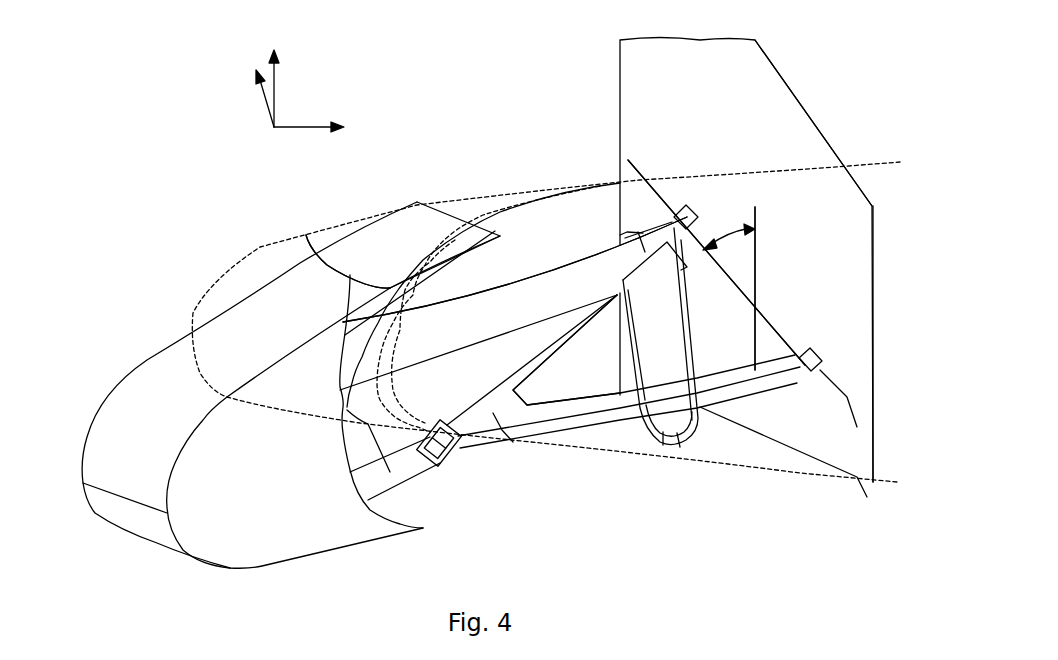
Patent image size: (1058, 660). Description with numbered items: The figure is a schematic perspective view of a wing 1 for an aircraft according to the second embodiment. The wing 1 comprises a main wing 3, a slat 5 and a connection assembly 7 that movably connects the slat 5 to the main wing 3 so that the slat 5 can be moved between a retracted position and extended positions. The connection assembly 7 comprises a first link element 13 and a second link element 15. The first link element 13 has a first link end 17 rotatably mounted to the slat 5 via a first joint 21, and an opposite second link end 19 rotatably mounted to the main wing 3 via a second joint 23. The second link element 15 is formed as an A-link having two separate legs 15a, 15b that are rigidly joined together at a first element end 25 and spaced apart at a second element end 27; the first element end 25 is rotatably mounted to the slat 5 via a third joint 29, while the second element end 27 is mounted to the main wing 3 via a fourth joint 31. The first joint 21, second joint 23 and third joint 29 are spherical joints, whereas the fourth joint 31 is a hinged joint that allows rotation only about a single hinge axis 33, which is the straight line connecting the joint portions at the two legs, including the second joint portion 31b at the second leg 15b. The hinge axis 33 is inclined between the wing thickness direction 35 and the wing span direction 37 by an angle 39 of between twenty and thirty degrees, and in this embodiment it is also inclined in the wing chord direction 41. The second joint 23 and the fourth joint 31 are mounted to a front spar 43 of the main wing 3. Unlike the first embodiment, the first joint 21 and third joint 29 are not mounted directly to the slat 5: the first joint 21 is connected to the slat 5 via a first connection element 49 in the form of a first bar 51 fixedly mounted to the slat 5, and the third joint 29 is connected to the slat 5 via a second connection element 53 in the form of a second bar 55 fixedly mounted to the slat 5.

The wing 1 is at (183, 134).
The main wing 3 is at (857, 140).
The slat 5 is at (143, 389).
The connection assembly 7 is at (547, 167).
The first link element 13 is at (677, 343).
The second link element 15 is at (613, 407).
The first leg 15a is at (547, 347).
The second leg 15b is at (777, 390).
The first link end 17 is at (670, 289).
The second link end 19 is at (666, 441).
The first joint 21 is at (620, 235).
The second joint 23 is at (680, 441).
The first element end 25 is at (519, 450).
The second element end 27 is at (822, 352).
The third joint 29 is at (458, 463).
The fourth joint 31 is at (687, 207).
The second joint portion 31b is at (810, 359).
The hinge axis 33 is at (641, 198).
The wing thickness direction 35 is at (275, 70).
The wing span direction 37 is at (251, 92).
The angle 39 is at (733, 240).
The wing chord direction 41 is at (326, 124).
The front spar 43 is at (840, 224).
The first connection element 49 is at (483, 319).
The first bar 51 is at (515, 269).
The second connection element 53 is at (306, 235).
The second bar 55 is at (348, 261).